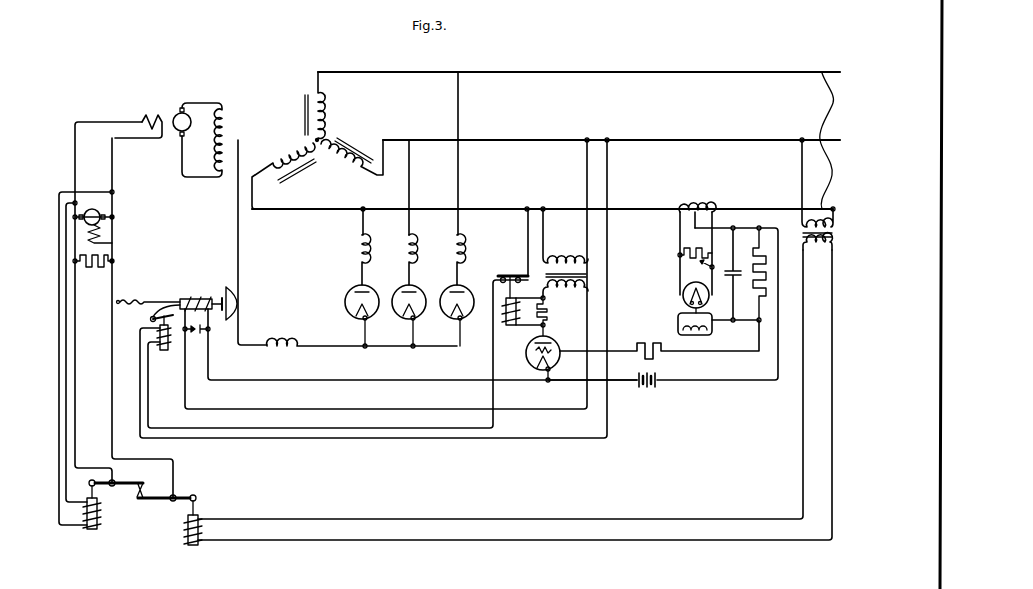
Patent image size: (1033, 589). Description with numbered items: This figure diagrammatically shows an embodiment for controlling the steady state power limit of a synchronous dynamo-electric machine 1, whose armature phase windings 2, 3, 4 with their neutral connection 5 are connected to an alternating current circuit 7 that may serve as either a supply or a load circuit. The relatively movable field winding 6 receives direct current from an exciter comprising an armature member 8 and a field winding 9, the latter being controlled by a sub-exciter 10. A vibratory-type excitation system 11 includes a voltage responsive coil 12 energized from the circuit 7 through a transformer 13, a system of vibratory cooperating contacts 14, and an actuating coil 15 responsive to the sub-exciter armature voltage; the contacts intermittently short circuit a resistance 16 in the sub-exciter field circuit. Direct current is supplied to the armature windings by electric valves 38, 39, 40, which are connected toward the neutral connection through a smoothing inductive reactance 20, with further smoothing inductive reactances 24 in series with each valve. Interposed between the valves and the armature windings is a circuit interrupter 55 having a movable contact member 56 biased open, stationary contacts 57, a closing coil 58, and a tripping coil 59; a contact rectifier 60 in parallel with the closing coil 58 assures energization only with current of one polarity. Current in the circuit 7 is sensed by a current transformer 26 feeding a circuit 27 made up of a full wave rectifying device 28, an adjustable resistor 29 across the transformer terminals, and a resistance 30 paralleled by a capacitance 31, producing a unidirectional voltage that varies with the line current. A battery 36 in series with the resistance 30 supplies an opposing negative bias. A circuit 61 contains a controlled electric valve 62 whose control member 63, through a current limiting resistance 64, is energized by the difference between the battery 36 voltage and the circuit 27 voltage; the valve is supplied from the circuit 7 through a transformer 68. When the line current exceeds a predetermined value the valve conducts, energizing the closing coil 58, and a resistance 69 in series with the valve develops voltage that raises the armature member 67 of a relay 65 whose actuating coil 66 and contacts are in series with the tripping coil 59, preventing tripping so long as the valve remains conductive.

The dynamo-electric machine 1 is at (317, 140).
The armature phase winding 2 is at (325, 103).
The armature phase winding 3 is at (352, 172).
The armature phase winding 4 is at (286, 160).
The neutral connection 5 is at (320, 138).
The field winding 6 is at (216, 147).
The alternating current circuit 7 is at (546, 140).
The armature member 8 is at (180, 108).
The field winding 9 is at (140, 118).
The sub-exciter 10 is at (135, 225).
The excitation system 11 is at (457, 400).
The voltage responsive coil 12 is at (186, 542).
The transformer 13 is at (800, 230).
The vibratory cooperating contacts 14 is at (166, 495).
The actuating coil 15 is at (99, 509).
The resistance 16 is at (94, 268).
The smoothing inductive reactance 20 is at (282, 338).
The smoothing inductive reactance 24 is at (451, 248).
The current transformer 26 is at (696, 200).
The circuit 27 is at (728, 257).
The full wave rectifying device 28 is at (692, 281).
The adjustable resistor 29 is at (694, 246).
The resistance 30 is at (766, 252).
The capacitance 31 is at (727, 262).
The battery 36 is at (647, 389).
The electric valve 38 is at (347, 290).
The electric valve 39 is at (394, 290).
The electric valve 40 is at (442, 290).
The circuit interrupter 55 is at (377, 289).
The movable contact member 56 is at (226, 289).
The stationary contacts 57 is at (243, 304).
The closing coil 58 is at (186, 298).
The tripping coil 59 is at (192, 281).
The contact rectifier 60 is at (196, 333).
The circuit 61 is at (535, 348).
The controlled electric valve 62 is at (527, 346).
The control member 63 is at (535, 360).
The current limiting resistance 64 is at (649, 341).
The relay 65 is at (538, 272).
The actuating coil 66 is at (505, 316).
The armature member 67 is at (499, 274).
The transformer 68 is at (575, 253).
The resistance 69 is at (549, 306).